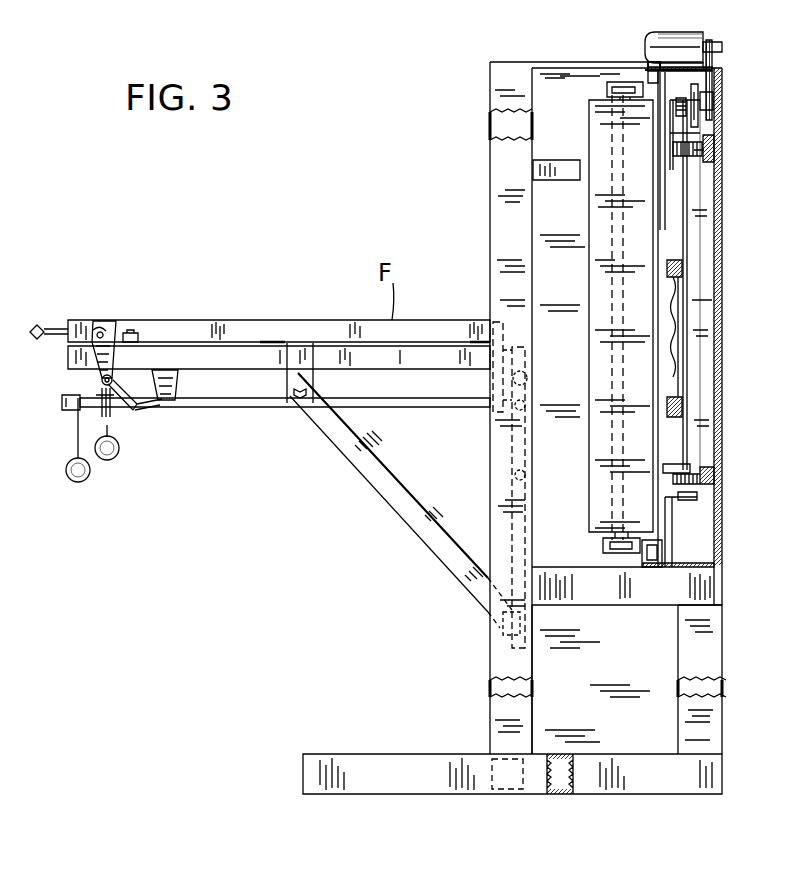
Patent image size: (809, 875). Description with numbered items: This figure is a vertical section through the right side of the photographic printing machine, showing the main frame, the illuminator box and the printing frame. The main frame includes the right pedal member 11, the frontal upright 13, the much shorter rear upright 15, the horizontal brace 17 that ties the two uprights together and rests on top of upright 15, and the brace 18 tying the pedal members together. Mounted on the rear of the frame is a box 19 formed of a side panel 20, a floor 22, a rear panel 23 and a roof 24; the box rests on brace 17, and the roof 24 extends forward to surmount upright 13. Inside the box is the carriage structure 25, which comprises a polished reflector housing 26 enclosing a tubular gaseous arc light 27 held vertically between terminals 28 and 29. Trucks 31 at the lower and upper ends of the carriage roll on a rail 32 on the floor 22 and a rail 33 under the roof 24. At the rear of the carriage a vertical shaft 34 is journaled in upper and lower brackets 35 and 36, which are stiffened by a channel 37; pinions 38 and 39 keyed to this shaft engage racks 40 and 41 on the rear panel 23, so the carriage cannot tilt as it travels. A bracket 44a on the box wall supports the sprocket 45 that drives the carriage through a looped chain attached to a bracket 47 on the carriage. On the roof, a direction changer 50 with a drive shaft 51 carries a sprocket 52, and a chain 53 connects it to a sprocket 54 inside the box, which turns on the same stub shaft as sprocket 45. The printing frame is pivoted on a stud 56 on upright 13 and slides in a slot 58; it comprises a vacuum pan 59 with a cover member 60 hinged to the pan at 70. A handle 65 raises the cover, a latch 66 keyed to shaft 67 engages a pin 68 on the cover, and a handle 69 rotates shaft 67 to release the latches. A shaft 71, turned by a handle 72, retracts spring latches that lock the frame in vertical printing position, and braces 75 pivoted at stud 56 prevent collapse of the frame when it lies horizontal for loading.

The pedal member 11 is at (410, 765).
The frontal upright 13 is at (502, 192).
The upright 15 is at (690, 712).
The horizontal brace 17 is at (605, 607).
The horizontal brace 18 is at (518, 797).
The box 19 is at (716, 532).
The side panel 20 is at (705, 258).
The floor 22 is at (705, 578).
The rear panel 23 is at (722, 402).
The roof 24 is at (545, 62).
The carriage structure 25 is at (604, 293).
The housing 26 is at (590, 262).
The tubular gaseous arc light 27 is at (613, 437).
The terminal 28 is at (617, 553).
The terminal 29 is at (607, 90).
The trucks 31 is at (650, 72).
The rail 32 is at (648, 562).
The rail 33 is at (652, 66).
The shaft 34 is at (688, 300).
The bracket 35 is at (672, 137).
The bracket 36 is at (672, 500).
The channel 37 is at (703, 205).
The pinion 38 is at (708, 142).
The pinion 39 is at (700, 466).
The rack 40 is at (702, 152).
The rack 41 is at (714, 485).
The bracket 44a is at (698, 114).
The sprocket 45 is at (678, 108).
The bracket 47 is at (668, 100).
The direction changer 50 is at (688, 40).
The drive shaft 51 is at (722, 48).
The sprocket 52 is at (712, 48).
The chain 53 is at (716, 74).
The sprocket 54 is at (716, 102).
The stud 56 is at (505, 621).
The slot 58 is at (515, 447).
The vacuum pan 59 is at (262, 352).
The cover member 60 is at (215, 322).
The handle 65 is at (40, 322).
The latch 66 is at (108, 345).
The shaft 67 is at (102, 380).
The pin 68 is at (100, 330).
The handle 69 is at (119, 447).
The hinge 70 is at (528, 376).
The shaft 71 is at (237, 403).
The handle 72 is at (72, 480).
The braces 75 is at (380, 482).